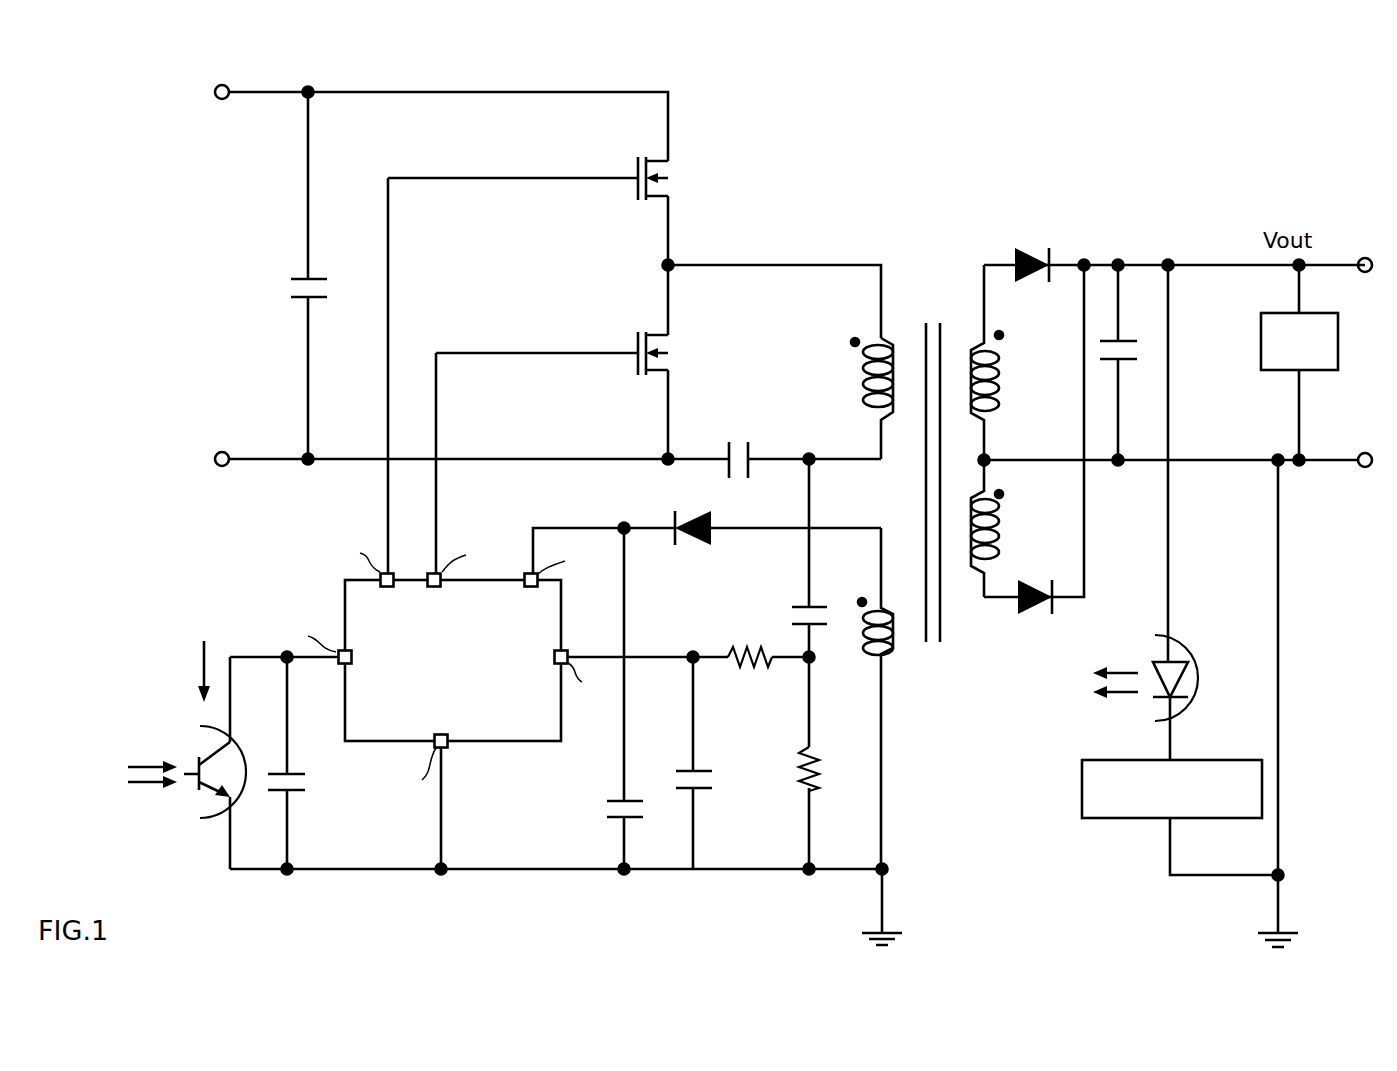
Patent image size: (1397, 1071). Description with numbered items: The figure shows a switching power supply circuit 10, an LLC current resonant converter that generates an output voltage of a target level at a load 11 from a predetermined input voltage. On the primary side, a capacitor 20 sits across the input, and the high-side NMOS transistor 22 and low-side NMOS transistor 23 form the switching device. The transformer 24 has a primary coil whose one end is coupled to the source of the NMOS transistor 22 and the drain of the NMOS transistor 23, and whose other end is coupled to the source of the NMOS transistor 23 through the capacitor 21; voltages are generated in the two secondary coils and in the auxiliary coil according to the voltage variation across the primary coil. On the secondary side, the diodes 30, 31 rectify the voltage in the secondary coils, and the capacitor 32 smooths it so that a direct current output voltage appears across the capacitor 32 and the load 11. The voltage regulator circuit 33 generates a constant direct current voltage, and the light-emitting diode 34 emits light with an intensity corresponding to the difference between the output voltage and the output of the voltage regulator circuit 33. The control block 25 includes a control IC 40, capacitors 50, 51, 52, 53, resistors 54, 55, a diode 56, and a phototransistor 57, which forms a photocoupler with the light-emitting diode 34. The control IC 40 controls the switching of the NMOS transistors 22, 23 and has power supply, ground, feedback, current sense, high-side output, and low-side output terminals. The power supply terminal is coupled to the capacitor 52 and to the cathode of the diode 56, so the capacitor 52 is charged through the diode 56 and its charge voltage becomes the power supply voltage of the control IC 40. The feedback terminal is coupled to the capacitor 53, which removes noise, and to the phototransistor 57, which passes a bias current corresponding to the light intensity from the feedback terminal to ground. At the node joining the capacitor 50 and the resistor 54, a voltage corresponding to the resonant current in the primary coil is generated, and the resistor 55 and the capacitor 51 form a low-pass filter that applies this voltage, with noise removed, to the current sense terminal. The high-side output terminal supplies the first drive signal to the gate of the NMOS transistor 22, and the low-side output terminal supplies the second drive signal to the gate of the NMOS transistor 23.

The switching power supply circuit 10 is at (1110, 85).
The load 11 is at (1338, 342).
The capacitor 20 is at (322, 285).
The capacitor 21 is at (746, 440).
The NMOS transistor 22 is at (648, 198).
The NMOS transistor 23 is at (648, 374).
The transformer 24 is at (928, 320).
The control block 25 is at (218, 548).
The diode 30 is at (1018, 250).
The diode 31 is at (1018, 617).
The capacitor 32 is at (1133, 360).
The voltage regulator circuit 33 is at (1222, 758).
The light-emitting diode 34 is at (1181, 652).
The control IC 40 is at (345, 580).
The capacitor 50 is at (823, 605).
The capacitor 51 is at (708, 770).
The capacitor 52 is at (610, 820).
The capacitor 53 is at (299, 794).
The resistor 54 is at (797, 777).
The resistor 55 is at (727, 651).
The diode 56 is at (701, 540).
The phototransistor 57 is at (205, 812).